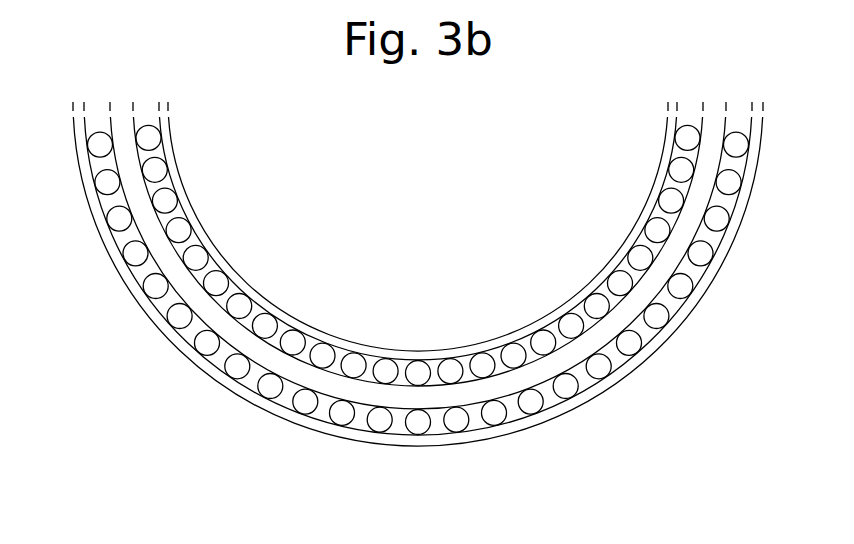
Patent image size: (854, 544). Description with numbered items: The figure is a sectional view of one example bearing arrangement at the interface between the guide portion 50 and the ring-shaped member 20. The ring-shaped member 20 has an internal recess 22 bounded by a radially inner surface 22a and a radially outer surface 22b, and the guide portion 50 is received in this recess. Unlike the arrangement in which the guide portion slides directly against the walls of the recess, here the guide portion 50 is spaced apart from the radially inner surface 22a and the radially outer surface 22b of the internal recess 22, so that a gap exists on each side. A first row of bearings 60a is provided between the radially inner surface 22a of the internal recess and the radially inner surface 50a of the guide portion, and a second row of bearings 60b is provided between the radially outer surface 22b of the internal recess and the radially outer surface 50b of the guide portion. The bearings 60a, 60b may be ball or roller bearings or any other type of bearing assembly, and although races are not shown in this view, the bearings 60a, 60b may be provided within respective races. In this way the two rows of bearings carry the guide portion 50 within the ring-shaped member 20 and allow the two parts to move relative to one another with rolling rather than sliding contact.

The ring-shaped member 20 is at (578, 292).
The internal recess 22 is at (429, 297).
The radially inner surface of the internal recess 22a is at (320, 336).
The radially outer surface of the internal recess 22b is at (288, 408).
The guide portion 50 is at (418, 309).
The radially inner surface of the guide portion 50a is at (402, 368).
The radially outer surface of the guide portion 50b is at (245, 365).
The first row of bearings 60a is at (512, 350).
The second row of bearings 60b is at (532, 403).